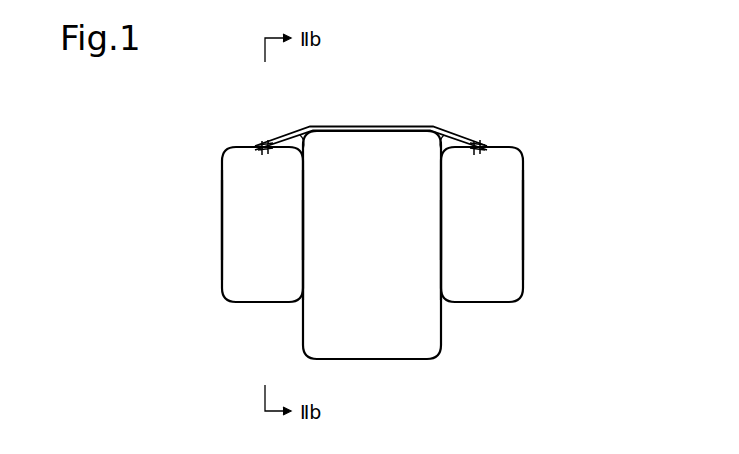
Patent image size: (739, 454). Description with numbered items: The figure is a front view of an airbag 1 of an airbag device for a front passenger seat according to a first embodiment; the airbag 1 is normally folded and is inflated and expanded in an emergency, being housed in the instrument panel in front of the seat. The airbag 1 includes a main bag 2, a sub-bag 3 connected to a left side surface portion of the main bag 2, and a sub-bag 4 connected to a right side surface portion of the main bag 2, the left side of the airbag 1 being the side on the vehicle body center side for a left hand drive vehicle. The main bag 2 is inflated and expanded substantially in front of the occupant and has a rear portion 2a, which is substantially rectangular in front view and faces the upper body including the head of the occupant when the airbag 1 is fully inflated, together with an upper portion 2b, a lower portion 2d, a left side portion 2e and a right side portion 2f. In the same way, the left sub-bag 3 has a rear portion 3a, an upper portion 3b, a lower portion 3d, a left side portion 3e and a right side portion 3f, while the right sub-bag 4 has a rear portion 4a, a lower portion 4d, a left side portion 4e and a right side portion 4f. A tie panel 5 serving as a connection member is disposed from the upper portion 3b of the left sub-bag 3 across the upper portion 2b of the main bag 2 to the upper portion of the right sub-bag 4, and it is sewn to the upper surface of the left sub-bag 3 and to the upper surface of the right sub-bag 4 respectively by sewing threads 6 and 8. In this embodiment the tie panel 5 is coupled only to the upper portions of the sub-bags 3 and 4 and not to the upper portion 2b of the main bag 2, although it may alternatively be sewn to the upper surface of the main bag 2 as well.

The airbag 1 is at (584, 73).
The main bag 2 is at (380, 364).
The rear portion 2a is at (428, 332).
The upper portion 2b is at (336, 126).
The lower portion 2d is at (352, 362).
The left side portion 2e is at (304, 244).
The right side portion 2f is at (440, 244).
The sub-bag 3 is at (263, 304).
The rear portion 3a is at (233, 231).
The upper portion 3b is at (250, 145).
The lower portion 3d is at (245, 303).
The left side portion 3e is at (222, 193).
The right side portion 3f is at (303, 198).
The sub-bag 4 is at (487, 304).
The rear portion 4a is at (510, 233).
The lower portion 4d is at (510, 302).
The left side portion 4e is at (441, 206).
The right side portion 4f is at (525, 198).
The tie panel 5 is at (412, 126).
The sewing thread 6 is at (267, 140).
The sewing thread 8 is at (476, 140).